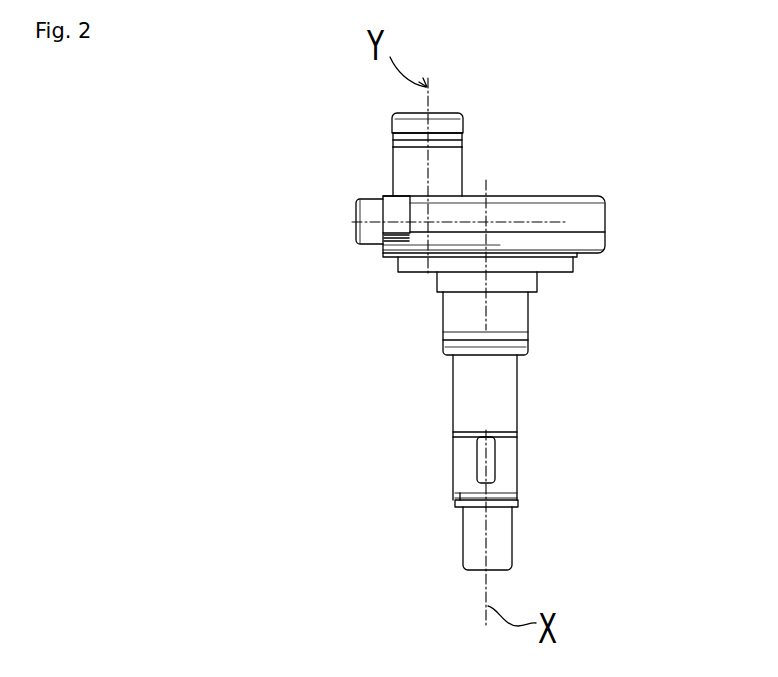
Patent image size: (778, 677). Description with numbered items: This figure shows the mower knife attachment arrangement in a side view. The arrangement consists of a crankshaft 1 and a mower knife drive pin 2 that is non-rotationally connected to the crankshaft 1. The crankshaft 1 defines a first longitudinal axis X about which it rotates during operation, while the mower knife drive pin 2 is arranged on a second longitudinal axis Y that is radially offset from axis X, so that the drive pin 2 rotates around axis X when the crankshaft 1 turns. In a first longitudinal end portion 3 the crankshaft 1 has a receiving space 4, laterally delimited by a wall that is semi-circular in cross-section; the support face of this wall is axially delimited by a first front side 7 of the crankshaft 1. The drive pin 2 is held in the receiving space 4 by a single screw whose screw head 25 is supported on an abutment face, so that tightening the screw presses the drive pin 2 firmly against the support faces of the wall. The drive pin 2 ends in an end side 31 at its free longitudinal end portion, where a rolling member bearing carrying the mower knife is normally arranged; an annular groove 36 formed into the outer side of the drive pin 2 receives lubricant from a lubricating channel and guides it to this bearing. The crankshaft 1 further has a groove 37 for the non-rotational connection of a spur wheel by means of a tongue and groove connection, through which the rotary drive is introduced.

The crankshaft 1 is at (516, 392).
The mower knife drive pin 2 is at (459, 162).
The first longitudinal end portion 3 is at (582, 258).
The receiving space 4 is at (406, 223).
The first front side 7 is at (562, 197).
The screw head 25 is at (367, 207).
The end side 31 is at (442, 113).
The annular groove 36 is at (458, 136).
The groove 37 is at (488, 467).